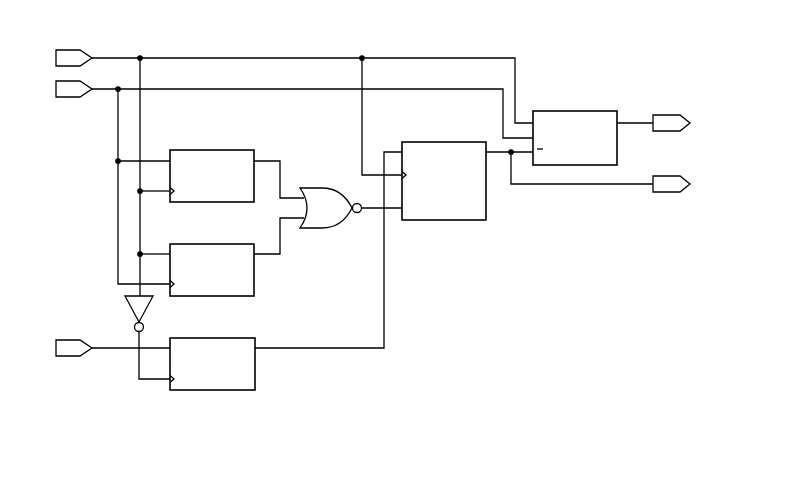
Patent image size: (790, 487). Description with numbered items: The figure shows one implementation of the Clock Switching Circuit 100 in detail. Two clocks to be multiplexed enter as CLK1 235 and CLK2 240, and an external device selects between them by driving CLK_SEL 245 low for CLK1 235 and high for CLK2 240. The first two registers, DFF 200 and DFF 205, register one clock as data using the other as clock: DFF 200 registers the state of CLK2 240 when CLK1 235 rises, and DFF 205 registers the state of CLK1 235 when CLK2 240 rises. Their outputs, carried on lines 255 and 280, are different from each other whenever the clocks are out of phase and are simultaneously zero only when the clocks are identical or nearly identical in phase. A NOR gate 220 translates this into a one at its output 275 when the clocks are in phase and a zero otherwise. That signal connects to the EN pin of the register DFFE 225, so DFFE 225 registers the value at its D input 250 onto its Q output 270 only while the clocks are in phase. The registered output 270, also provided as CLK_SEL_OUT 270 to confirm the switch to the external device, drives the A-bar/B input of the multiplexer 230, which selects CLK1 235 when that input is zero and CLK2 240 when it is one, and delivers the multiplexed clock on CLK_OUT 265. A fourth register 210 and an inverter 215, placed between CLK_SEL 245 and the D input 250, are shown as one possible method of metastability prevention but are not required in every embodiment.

The Clock Switching Circuit 100 is at (378, 244).
The register DFF 200 is at (251, 197).
The register DFF 205 is at (251, 290).
The fourth register 210 is at (252, 385).
The inverter 215 is at (150, 323).
The NOR gate 220 is at (337, 222).
The register DFFE 225 is at (483, 214).
The multiplexer 230 is at (613, 160).
The CLK1 235 is at (96, 58).
The CLK2 240 is at (104, 93).
The CLK_SEL 245 is at (112, 349).
The D input 250 is at (328, 349).
The output signal line of DFF 200 to NOR gate 255 is at (280, 160).
The CLK_OUT 265 is at (640, 122).
The CLK_SEL_OUT 270 is at (612, 186).
The output 275 is at (392, 210).
The output signal line of DFF 205 to NOR gate 280 is at (281, 255).